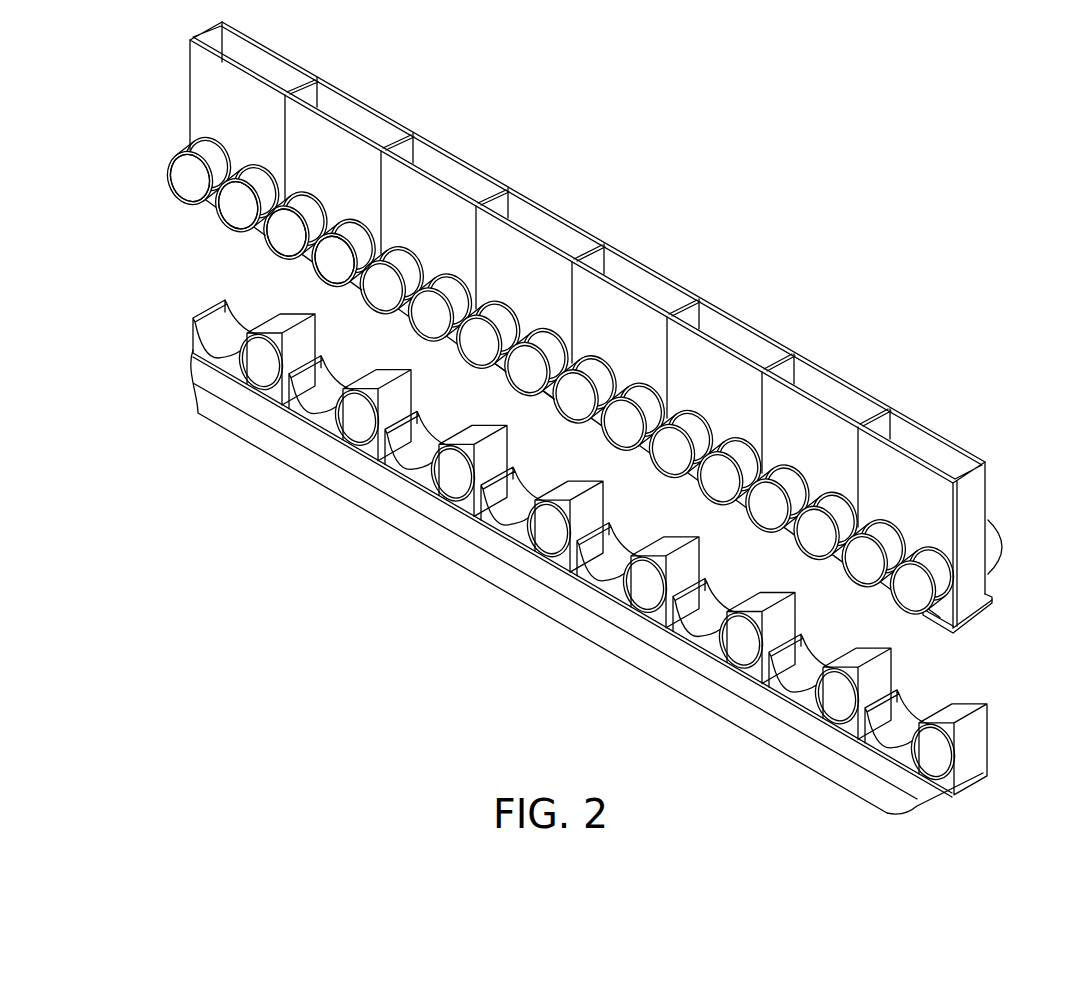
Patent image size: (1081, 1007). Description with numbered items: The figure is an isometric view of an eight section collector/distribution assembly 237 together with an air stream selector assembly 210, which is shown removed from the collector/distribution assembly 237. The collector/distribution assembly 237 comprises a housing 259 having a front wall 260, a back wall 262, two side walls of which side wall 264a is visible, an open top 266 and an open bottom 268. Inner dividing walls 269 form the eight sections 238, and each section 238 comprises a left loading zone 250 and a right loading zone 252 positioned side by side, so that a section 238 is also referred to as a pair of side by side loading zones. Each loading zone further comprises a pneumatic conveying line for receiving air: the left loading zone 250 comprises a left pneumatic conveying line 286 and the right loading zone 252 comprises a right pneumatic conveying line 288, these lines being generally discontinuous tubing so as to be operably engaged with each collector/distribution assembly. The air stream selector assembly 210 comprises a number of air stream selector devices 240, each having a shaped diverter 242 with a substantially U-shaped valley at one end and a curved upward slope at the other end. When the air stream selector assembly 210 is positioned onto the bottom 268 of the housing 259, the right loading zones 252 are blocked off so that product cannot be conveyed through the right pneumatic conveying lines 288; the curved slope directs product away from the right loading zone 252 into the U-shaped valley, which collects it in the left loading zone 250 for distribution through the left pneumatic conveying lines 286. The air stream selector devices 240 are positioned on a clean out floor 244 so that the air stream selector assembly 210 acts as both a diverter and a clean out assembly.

The air stream selector assembly 210 is at (973, 695).
The collector/distribution assembly 237 is at (740, 312).
The section 238 is at (263, 63).
The air stream selector device 240 is at (773, 620).
The shaped diverter 242 is at (757, 598).
The clean out floor 244 is at (570, 615).
The left loading zone 250 is at (207, 140).
The right loading zone 252 is at (250, 163).
The housing 259 is at (863, 381).
The front wall 260 is at (550, 398).
The back wall 262 is at (645, 273).
The side wall 264a is at (188, 74).
The open top 266 is at (557, 223).
The open bottom 268 is at (927, 610).
The inner dividing wall 269 is at (805, 358).
The left pneumatic conveying line 286 is at (189, 193).
The right pneumatic conveying line 288 is at (238, 220).